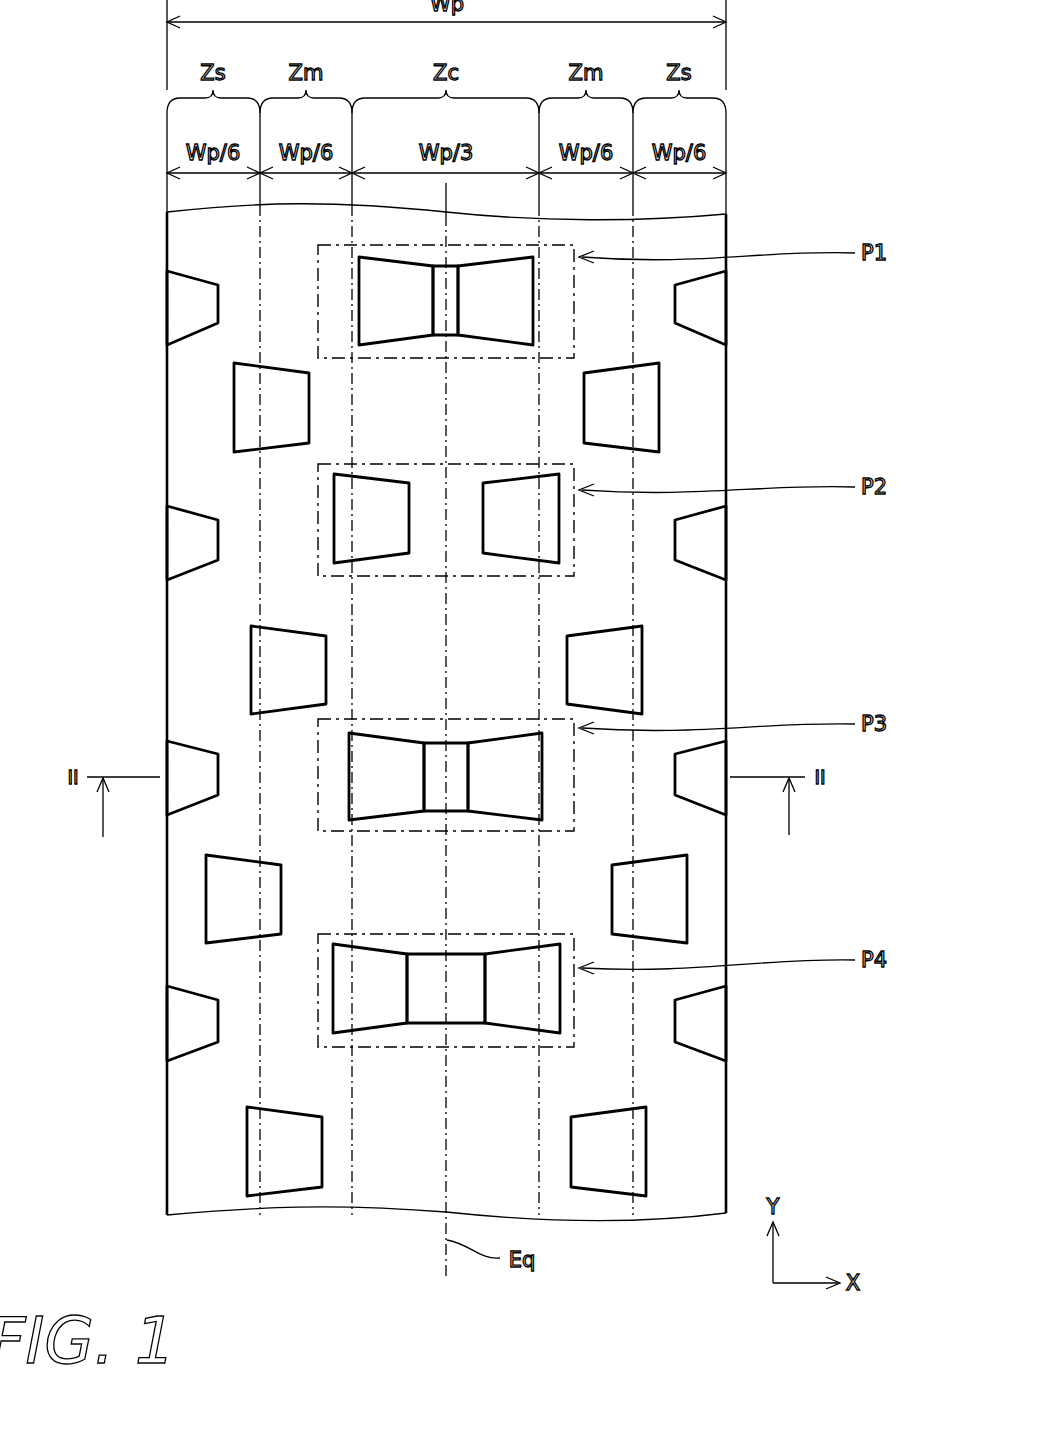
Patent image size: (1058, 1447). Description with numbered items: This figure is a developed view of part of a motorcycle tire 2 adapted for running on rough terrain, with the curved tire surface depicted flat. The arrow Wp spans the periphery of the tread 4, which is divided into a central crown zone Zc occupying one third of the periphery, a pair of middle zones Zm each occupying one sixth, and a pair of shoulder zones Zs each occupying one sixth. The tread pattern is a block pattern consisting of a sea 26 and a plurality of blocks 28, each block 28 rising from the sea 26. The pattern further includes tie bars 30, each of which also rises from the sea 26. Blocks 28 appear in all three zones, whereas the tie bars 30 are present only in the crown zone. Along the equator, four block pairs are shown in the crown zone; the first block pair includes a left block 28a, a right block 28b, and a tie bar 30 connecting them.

The motorcycle tire 2 is at (857, 30).
The tread 4 is at (738, 215).
The sea 26 is at (700, 427).
The block 28 is at (183, 307).
The left block 28a is at (402, 324).
The right block 28b is at (488, 324).
The tie bar 30 is at (456, 298).